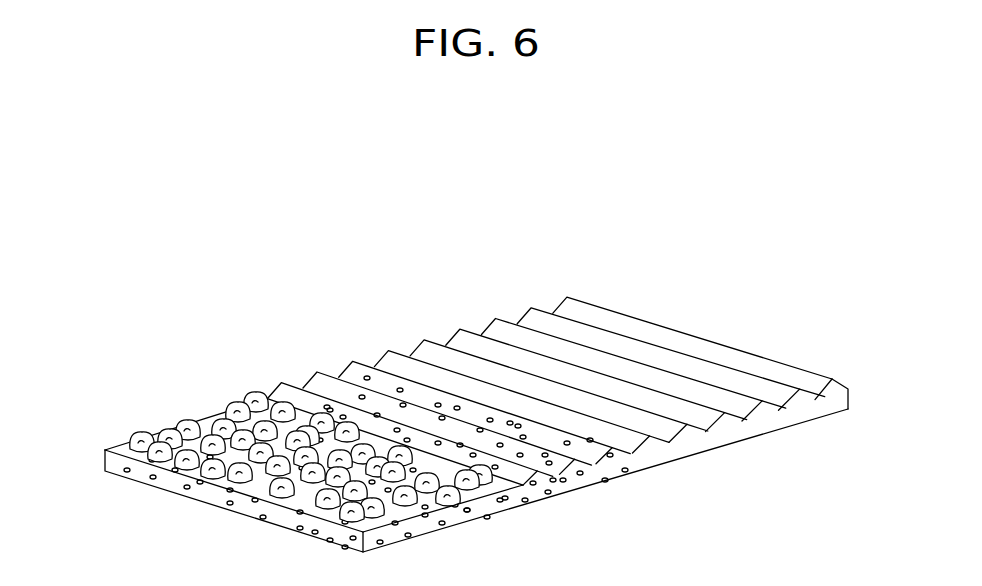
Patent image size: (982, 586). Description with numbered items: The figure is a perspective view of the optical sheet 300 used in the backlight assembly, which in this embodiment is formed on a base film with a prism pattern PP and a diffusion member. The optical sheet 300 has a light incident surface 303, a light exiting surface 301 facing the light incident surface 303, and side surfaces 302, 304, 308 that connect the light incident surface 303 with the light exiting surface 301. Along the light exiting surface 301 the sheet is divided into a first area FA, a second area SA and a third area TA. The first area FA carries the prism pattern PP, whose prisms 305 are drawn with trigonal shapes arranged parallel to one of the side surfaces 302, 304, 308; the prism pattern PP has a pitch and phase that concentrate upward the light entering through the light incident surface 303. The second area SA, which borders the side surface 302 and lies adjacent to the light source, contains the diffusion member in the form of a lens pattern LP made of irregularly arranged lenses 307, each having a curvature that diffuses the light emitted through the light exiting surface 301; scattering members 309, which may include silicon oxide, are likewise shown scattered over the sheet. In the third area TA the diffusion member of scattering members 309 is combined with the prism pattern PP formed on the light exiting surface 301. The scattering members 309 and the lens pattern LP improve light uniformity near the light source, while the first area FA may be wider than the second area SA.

The optical sheet 300 is at (372, 147).
The light exiting surface 301 is at (700, 340).
The side surface 302 is at (203, 490).
The light incident surface 303 is at (568, 495).
The side surface 304 is at (688, 443).
The prism 305 is at (787, 373).
The lens 307 is at (187, 423).
The side surface 308 is at (128, 443).
The scattering member 309 is at (440, 520).
The lens pattern LP is at (147, 420).
The prism pattern PP is at (636, 293).
The second area SA is at (227, 328).
The third area TA is at (342, 296).
The first area FA is at (538, 235).